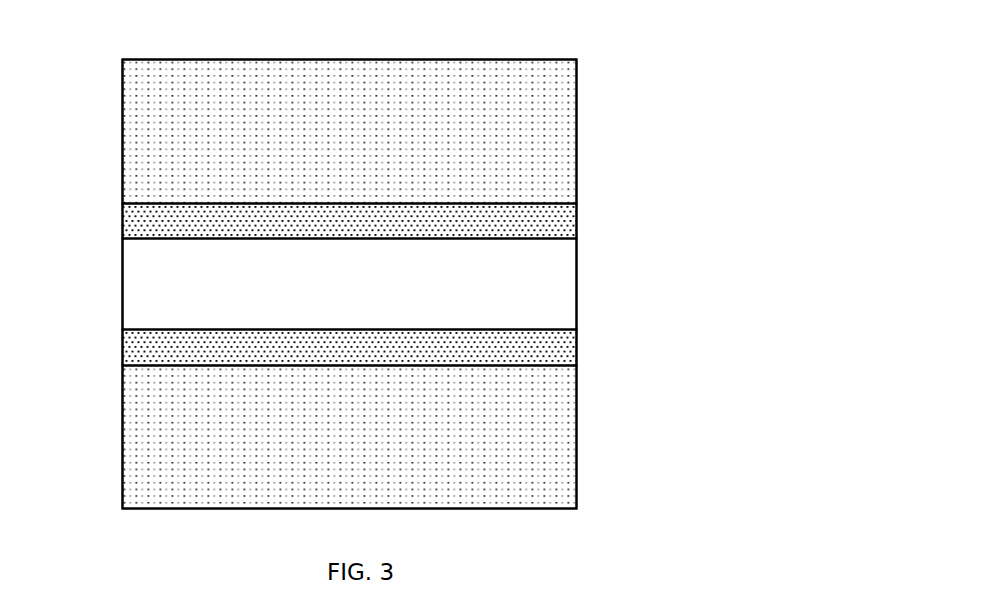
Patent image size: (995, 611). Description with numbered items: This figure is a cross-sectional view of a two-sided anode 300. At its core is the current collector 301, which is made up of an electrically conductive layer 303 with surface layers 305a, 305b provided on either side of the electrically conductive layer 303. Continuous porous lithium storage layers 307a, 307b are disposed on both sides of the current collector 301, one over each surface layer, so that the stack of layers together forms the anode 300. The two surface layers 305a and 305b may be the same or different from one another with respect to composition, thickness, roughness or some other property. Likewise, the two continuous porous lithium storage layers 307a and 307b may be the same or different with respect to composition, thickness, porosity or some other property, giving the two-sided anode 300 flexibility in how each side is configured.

The anode 300 is at (670, 26).
The current collector 301 is at (377, 282).
The electrically conductive layer 303 is at (563, 302).
The surface layer 305a is at (562, 223).
The surface layer 305b is at (557, 352).
The continuous porous lithium storage layer 307a is at (150, 138).
The continuous porous lithium storage layer 307b is at (155, 438).